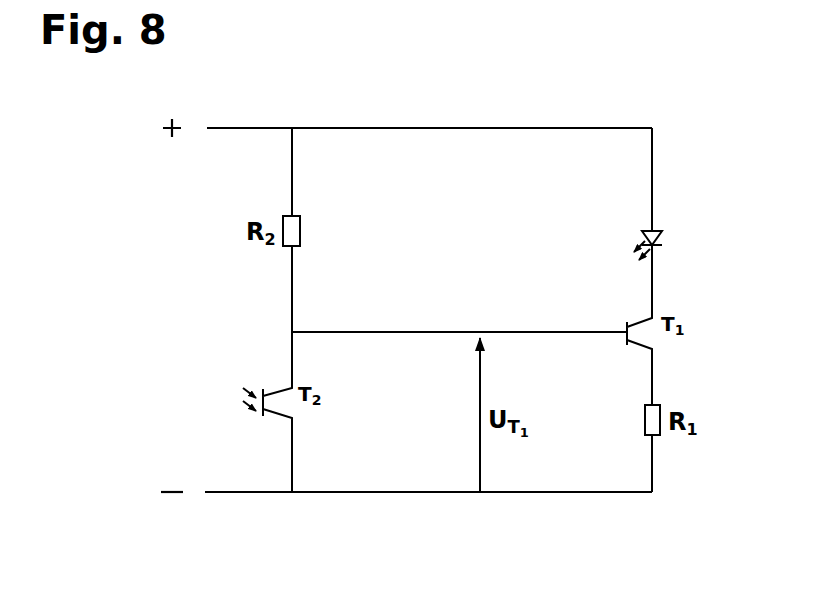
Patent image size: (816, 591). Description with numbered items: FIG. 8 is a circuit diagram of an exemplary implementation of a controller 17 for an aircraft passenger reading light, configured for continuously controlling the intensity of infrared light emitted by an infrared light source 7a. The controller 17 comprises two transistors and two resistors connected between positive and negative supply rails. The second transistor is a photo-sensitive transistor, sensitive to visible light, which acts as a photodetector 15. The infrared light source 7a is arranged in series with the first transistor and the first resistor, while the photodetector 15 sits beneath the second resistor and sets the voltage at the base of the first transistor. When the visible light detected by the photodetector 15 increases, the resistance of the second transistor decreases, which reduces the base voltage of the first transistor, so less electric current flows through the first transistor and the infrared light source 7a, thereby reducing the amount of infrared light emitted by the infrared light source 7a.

The controller 17 is at (663, 88).
The infrared light source 7a is at (674, 227).
The photodetector 15 is at (242, 380).